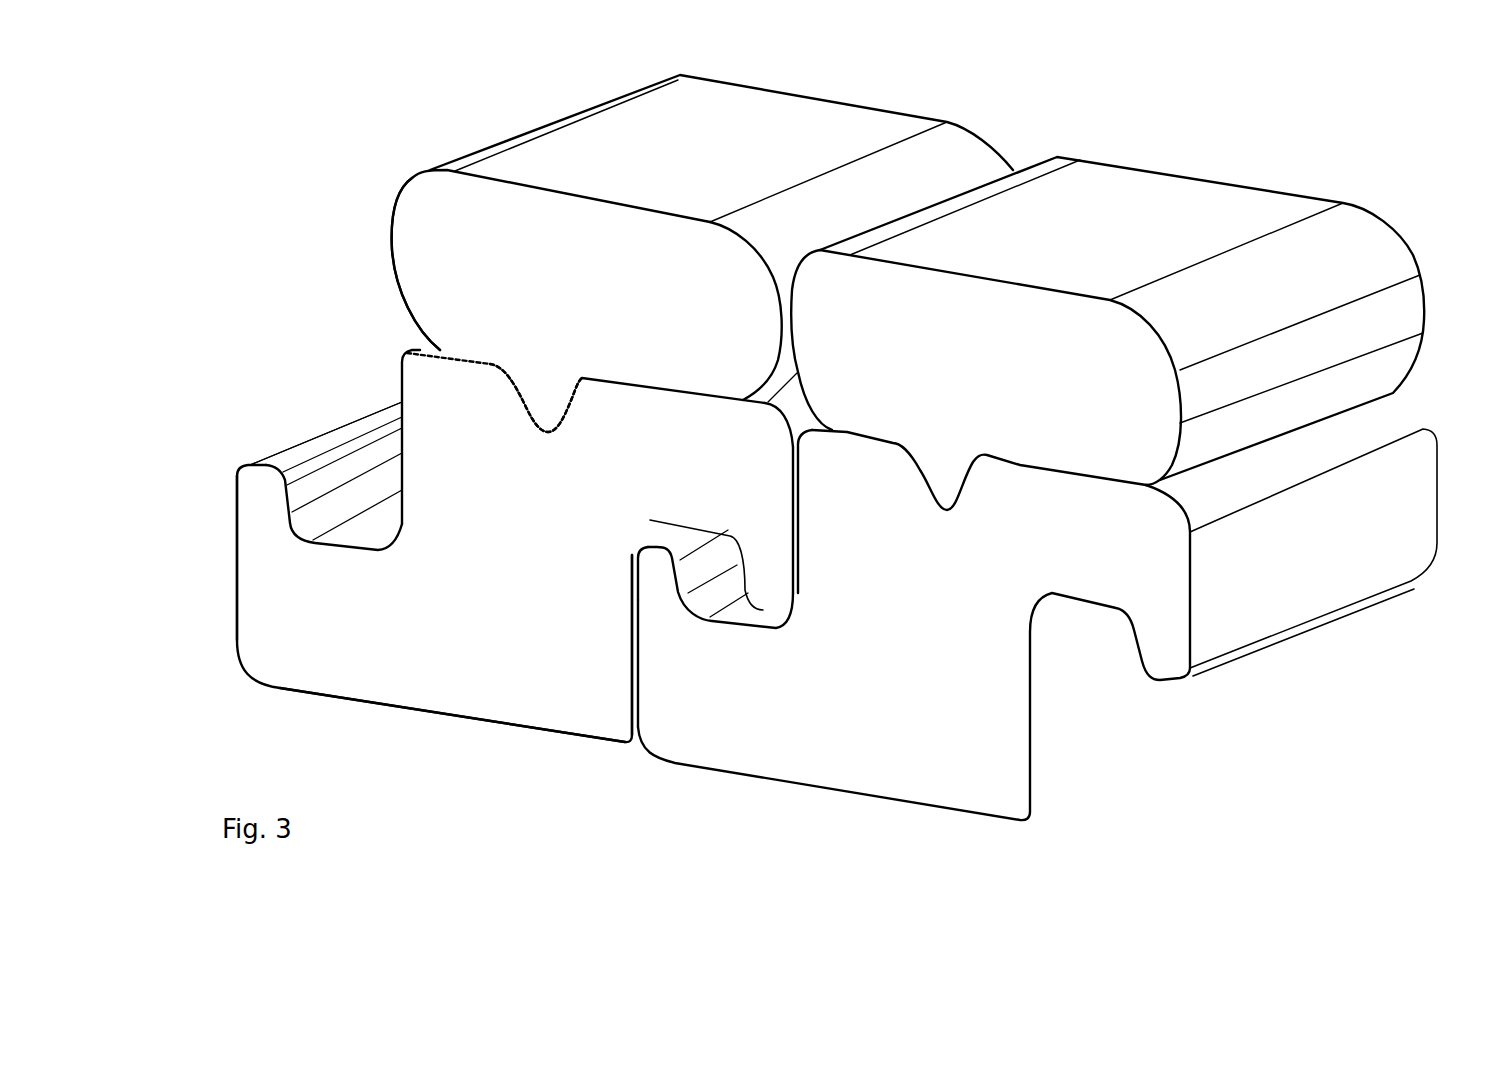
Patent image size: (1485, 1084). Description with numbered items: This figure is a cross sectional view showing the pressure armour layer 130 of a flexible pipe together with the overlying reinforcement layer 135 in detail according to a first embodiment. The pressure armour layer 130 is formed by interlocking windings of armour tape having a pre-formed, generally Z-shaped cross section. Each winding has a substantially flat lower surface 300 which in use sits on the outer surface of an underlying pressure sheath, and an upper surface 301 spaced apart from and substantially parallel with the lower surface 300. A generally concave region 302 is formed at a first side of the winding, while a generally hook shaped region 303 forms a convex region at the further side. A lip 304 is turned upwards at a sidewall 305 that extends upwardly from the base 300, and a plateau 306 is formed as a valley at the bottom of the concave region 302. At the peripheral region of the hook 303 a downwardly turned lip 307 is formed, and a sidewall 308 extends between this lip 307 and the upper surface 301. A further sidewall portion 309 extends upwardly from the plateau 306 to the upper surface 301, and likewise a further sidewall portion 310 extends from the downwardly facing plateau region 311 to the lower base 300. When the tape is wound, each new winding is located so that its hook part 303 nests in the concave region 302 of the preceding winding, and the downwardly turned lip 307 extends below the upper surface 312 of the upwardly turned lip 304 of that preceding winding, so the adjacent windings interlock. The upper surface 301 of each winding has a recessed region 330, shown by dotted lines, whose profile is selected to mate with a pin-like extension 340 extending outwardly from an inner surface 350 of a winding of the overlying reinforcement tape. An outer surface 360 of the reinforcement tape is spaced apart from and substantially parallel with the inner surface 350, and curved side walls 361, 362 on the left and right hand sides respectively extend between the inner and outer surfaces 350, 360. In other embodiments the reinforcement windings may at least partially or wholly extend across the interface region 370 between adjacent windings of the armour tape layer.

The pressure armour layer 130 is at (220, 443).
The reinforcement layer 135 is at (400, 112).
The lower surface 300 is at (440, 713).
The upper surface 301 is at (787, 420).
The concave region 302 is at (320, 395).
The hook shaped region 303 is at (766, 519).
The upwardly turned lip 304 is at (232, 512).
The sidewall 305 is at (236, 608).
The plateau 306 is at (355, 530).
The downwardly turned lip 307 is at (770, 573).
The sidewall 308 is at (800, 477).
The further sidewall portion 309 is at (403, 458).
The further sidewall portion 310 is at (630, 647).
The downwardly facing plateau region 311 is at (667, 527).
The upper surface of upwardly turned lip 312 is at (290, 458).
The recessed region 330 is at (548, 430).
The pin-like extension 340 is at (547, 392).
The inner surface 350 is at (658, 388).
The outer surface 360 is at (558, 150).
The curved side wall 361 is at (390, 247).
The curved side wall 362 is at (777, 307).
The interface region 370 is at (788, 437).